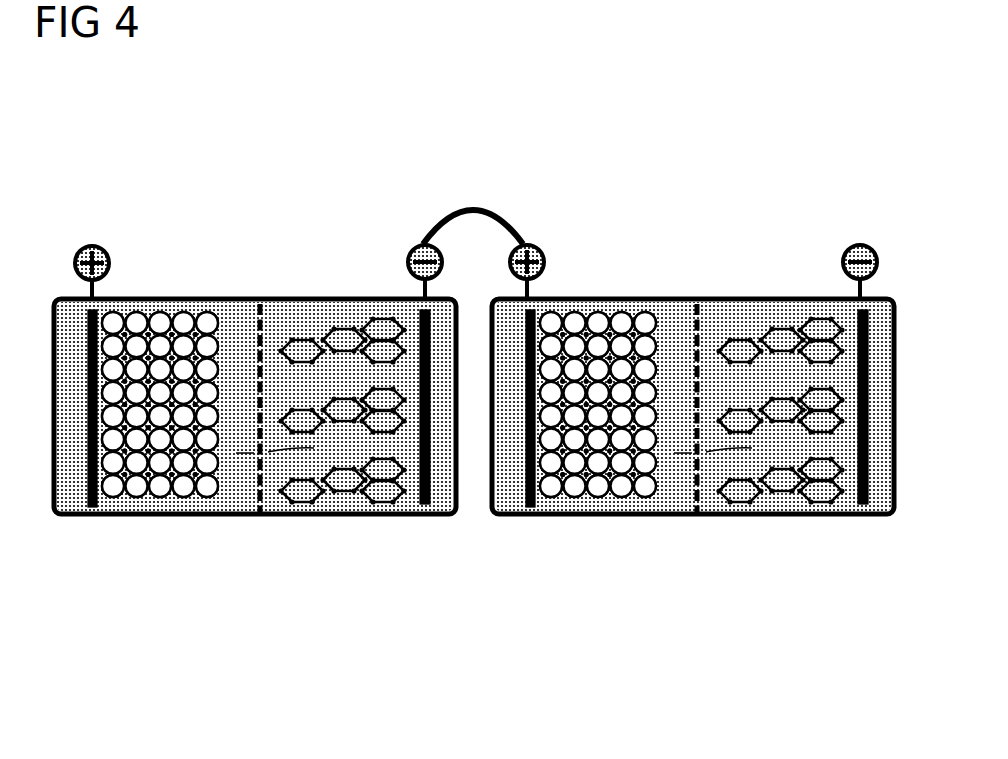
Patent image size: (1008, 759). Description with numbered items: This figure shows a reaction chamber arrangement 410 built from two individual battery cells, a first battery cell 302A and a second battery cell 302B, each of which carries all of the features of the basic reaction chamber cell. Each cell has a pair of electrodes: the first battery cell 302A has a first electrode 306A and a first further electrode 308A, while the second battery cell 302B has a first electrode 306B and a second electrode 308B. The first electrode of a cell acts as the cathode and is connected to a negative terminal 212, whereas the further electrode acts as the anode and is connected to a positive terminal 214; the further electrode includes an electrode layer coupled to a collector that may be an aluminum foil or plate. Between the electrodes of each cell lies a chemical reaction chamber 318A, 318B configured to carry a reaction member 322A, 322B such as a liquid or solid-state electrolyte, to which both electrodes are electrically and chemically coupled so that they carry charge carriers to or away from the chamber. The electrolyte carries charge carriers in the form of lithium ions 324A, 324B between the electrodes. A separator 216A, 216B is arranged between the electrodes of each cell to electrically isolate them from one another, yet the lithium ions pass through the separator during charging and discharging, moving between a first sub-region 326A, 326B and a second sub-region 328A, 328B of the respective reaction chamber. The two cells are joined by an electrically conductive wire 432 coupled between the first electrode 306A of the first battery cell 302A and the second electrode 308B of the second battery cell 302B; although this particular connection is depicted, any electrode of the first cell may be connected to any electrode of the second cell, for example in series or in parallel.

The battery system 410 is at (775, 21).
The electrically conductive wire 432 is at (468, 208).
The positive terminal 214 is at (88, 245).
The negative terminal 212 is at (866, 243).
The first battery cell 302A is at (344, 512).
The second battery cell 302B is at (782, 508).
The first further electrode of first battery cell 308A is at (93, 507).
The second electrode of second battery cell 308B is at (530, 505).
The first electrode of first battery cell 306A is at (425, 505).
The first electrode of second battery cell 306B is at (862, 505).
The reaction member of first battery cell 322A is at (164, 505).
The reaction member of second battery cell 322B is at (600, 505).
The second sub-region of reaction chamber of first battery cell 328A is at (157, 297).
The second sub-region of reaction chamber of second battery cell 328B is at (594, 297).
The separator of first battery cell 216A is at (258, 297).
The separator of second battery cell 216B is at (694, 297).
The lithium ions of first battery cell 324A is at (238, 460).
The lithium ions of second battery cell 324B is at (676, 460).
The chemical reaction chamber of first battery cell 318A is at (317, 297).
The chemical reaction chamber of second battery cell 318B is at (752, 297).
The first sub-region of reaction chamber of first battery cell 326A is at (378, 298).
The first sub-region of reaction chamber of second battery cell 326B is at (813, 297).